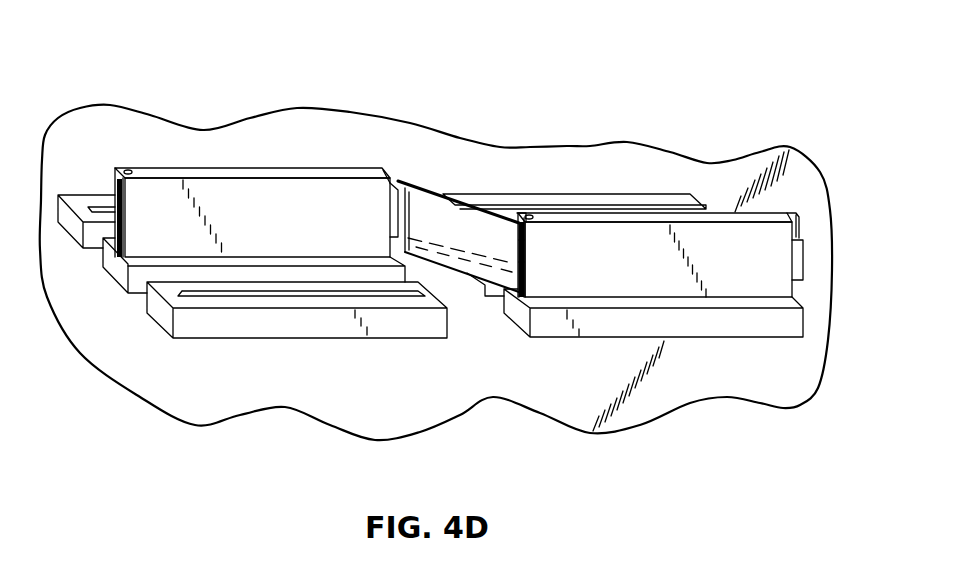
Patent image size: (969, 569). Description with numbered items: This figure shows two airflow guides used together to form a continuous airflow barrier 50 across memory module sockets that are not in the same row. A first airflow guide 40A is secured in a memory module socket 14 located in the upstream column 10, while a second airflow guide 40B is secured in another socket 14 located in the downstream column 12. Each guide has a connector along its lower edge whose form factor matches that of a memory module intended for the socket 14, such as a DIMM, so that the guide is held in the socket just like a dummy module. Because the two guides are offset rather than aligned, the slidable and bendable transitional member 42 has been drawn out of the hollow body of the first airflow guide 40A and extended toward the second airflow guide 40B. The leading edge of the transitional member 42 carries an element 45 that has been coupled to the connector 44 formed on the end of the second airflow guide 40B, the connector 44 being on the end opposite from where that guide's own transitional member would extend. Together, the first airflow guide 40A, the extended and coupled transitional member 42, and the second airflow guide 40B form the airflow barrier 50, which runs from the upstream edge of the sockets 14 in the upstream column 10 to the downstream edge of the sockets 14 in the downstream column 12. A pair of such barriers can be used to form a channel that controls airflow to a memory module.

The upstream column 10 is at (156, 99).
The downstream column 12 is at (543, 121).
The memory module socket 14 is at (117, 265).
The first airflow guide 40A is at (289, 147).
The second airflow guide 40B is at (724, 185).
The transitional member 42 is at (438, 213).
The connector 44 is at (525, 248).
The element 45 is at (521, 213).
The airflow barrier 50 is at (579, 171).